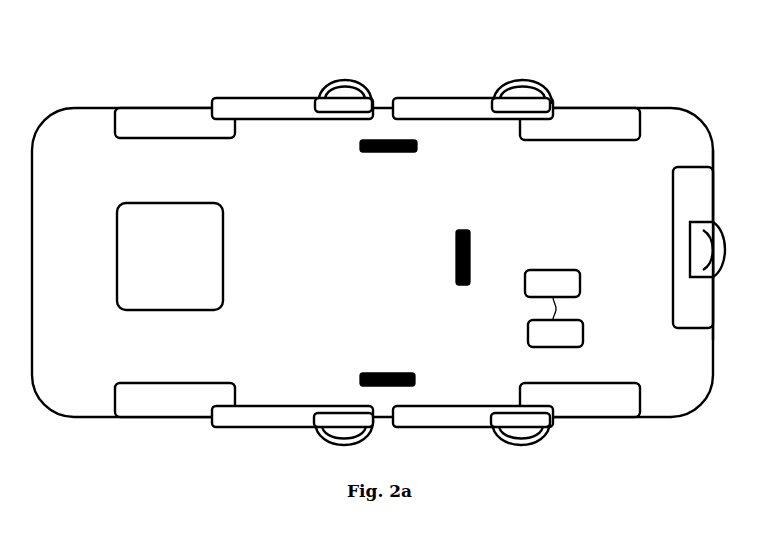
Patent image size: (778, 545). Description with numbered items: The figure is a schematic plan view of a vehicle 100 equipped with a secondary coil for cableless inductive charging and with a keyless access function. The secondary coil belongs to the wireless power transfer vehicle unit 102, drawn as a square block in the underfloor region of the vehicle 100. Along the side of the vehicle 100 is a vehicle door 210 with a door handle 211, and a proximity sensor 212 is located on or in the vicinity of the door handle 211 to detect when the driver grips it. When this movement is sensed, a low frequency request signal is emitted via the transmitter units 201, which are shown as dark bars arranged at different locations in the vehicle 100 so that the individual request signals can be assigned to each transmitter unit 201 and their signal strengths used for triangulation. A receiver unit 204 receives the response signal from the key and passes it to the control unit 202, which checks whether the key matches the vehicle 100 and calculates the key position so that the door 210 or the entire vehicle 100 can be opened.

The vehicle 100 is at (131, 62).
The wireless power transfer vehicle unit 102 is at (125, 234).
The transmitter unit 201 is at (418, 146).
The control unit 202 is at (574, 280).
The receiver unit 204 is at (577, 330).
The vehicle door 210 is at (262, 107).
The door handle 211 is at (340, 83).
The proximity sensor 212 is at (326, 102).